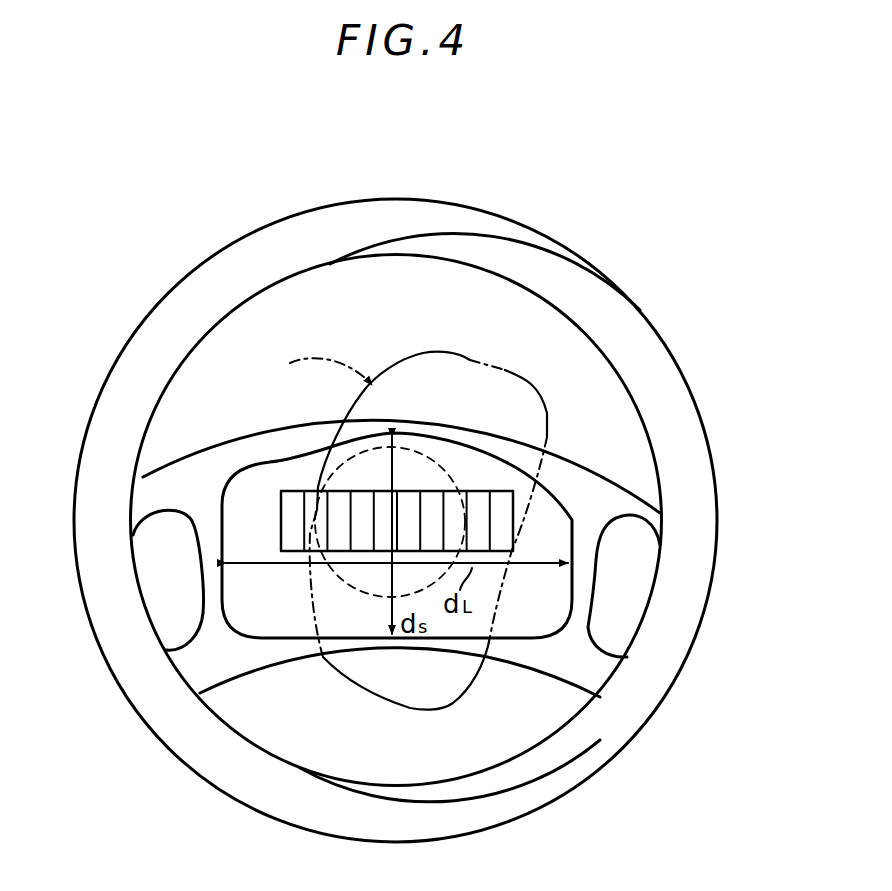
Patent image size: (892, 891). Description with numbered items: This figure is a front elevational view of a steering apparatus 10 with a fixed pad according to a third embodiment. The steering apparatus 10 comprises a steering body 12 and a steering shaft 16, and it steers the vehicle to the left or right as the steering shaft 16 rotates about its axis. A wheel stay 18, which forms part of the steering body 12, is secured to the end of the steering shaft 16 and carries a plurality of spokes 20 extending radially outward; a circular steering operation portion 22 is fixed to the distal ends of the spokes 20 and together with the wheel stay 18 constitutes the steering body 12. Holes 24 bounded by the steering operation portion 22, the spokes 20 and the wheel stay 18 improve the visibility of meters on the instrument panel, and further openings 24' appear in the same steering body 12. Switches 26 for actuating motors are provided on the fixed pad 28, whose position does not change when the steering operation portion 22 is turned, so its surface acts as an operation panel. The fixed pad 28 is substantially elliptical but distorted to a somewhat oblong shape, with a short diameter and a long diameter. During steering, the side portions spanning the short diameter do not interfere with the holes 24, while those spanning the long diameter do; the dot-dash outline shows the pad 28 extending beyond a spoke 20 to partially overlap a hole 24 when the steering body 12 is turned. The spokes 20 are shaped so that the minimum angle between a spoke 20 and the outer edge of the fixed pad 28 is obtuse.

The steering apparatus 10 is at (400, 477).
The steering body 12 is at (270, 220).
The steering shaft 16 is at (425, 455).
The wheel stay 18 is at (327, 440).
The spokes 20 is at (192, 477).
The steering operation portion 22 is at (658, 361).
The holes 24 is at (470, 527).
The grip portions 24' is at (416, 598).
The switches 26 is at (507, 491).
The fixed pad 28 is at (287, 457).